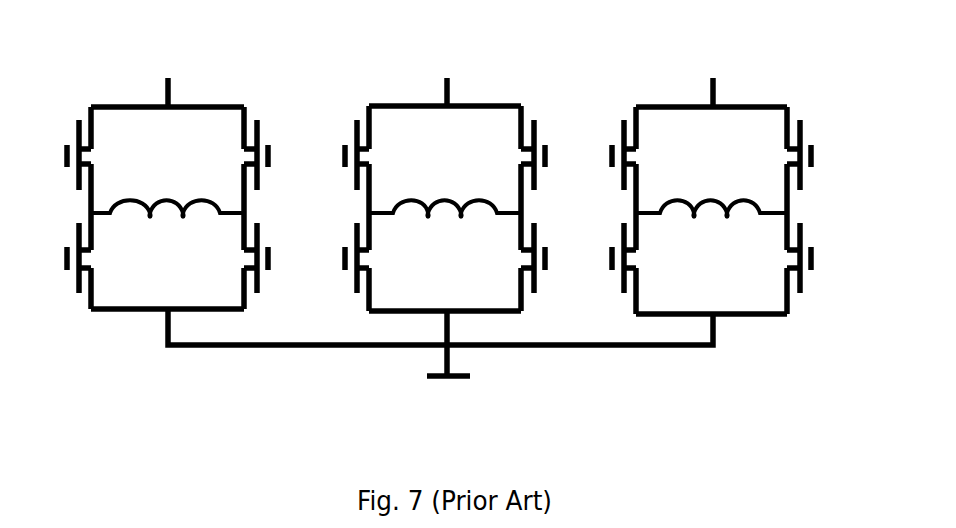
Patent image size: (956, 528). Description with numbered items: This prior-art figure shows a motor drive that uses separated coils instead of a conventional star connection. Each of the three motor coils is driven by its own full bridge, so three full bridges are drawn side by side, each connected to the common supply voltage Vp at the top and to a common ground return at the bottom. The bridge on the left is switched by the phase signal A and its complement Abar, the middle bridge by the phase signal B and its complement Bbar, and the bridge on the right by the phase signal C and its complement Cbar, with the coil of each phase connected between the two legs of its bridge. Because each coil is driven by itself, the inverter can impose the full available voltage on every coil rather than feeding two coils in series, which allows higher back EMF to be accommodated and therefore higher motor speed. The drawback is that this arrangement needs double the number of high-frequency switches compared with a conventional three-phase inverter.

The supply voltage Vp is at (442, 66).
The phase A drive transistors A is at (63, 206).
The phase A complement drive transistors Abar is at (265, 206).
The phase B drive transistors B is at (346, 206).
The phase B complement drive transistors Bbar is at (540, 206).
The phase C drive transistors C is at (611, 206).
The phase C complement drive transistors Cbar is at (811, 206).